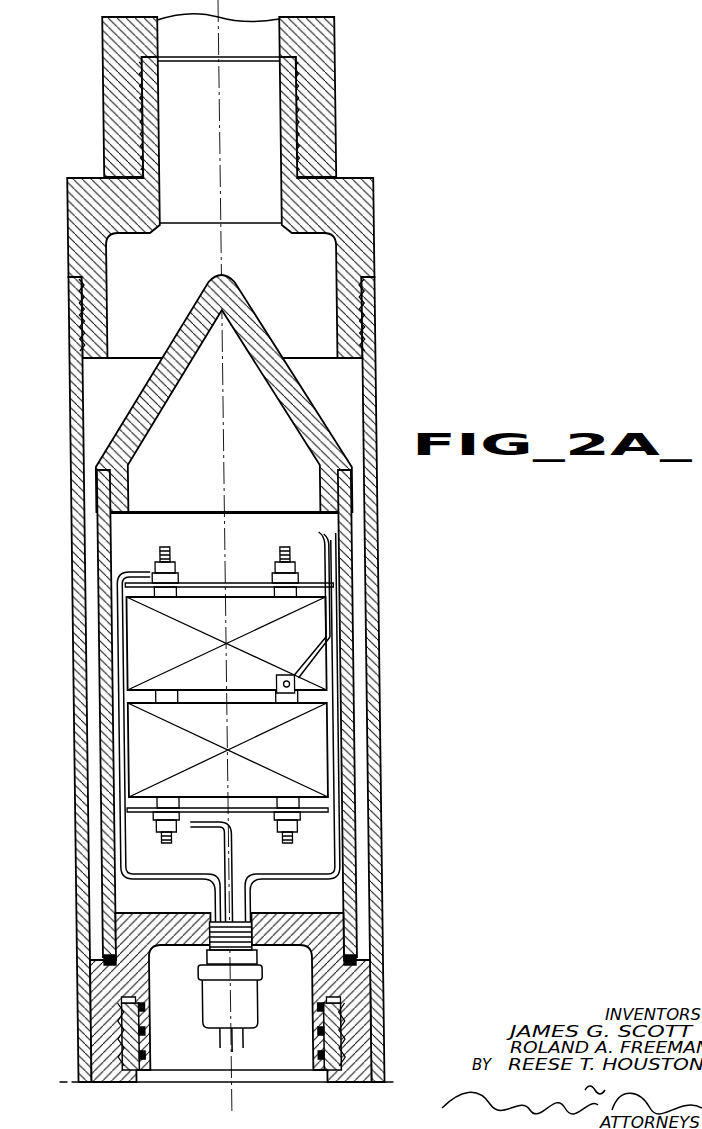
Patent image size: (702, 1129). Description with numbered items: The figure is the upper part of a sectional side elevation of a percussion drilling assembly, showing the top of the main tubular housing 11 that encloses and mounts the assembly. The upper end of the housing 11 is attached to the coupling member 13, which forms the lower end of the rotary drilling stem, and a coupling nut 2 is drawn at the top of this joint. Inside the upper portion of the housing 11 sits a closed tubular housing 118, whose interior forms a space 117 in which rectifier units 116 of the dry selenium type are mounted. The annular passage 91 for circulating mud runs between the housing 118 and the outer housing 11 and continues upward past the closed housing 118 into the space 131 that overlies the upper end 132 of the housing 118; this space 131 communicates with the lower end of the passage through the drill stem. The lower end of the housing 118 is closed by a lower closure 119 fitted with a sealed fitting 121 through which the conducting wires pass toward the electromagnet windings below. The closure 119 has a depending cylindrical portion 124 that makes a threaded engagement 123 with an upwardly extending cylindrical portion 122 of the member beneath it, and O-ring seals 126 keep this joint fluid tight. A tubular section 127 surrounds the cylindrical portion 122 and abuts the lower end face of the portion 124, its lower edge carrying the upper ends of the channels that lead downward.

The coupling nut 2 is at (331, 99).
The coupling member 13 is at (365, 237).
The space 131 is at (88, 430).
The upper end of the housing 132 is at (249, 318).
The tubular housing 11 is at (70, 555).
The annular passage 91 is at (355, 640).
The tubular housing 118 is at (97, 643).
The rectifier units 116 is at (134, 663).
The space 117 is at (319, 895).
The lower closure 119 is at (326, 925).
The depending cylindrical portion 124 is at (108, 980).
The threaded engagement 123 is at (111, 1020).
The upwardly extending cylindrical portion 122 is at (317, 1047).
The O-ring seals 126 is at (130, 1030).
The sealed fitting 121 is at (236, 1007).
The tubular section 127 is at (104, 1070).